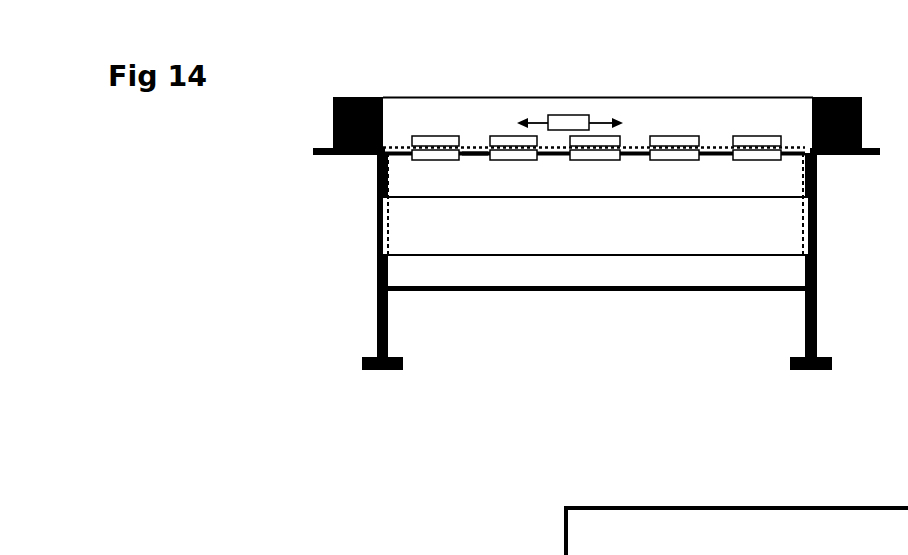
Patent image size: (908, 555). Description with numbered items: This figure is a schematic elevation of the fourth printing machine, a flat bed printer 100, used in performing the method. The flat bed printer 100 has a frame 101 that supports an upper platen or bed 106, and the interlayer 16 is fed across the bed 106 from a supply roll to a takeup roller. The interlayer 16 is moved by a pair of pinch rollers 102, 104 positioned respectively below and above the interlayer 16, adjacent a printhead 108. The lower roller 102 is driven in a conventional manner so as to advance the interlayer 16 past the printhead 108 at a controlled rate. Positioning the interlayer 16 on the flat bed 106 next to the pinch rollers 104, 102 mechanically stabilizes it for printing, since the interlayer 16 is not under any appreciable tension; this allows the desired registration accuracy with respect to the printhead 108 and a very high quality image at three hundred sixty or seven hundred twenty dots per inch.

The flat bed printer 100 is at (361, 407).
The frame 101 is at (395, 276).
The lower pinch roller 102 is at (433, 157).
The upper pinch roller 104 is at (435, 140).
The upper platen or bed 106 is at (480, 152).
The printhead 108 is at (567, 120).
The interlayer 16 is at (713, 147).